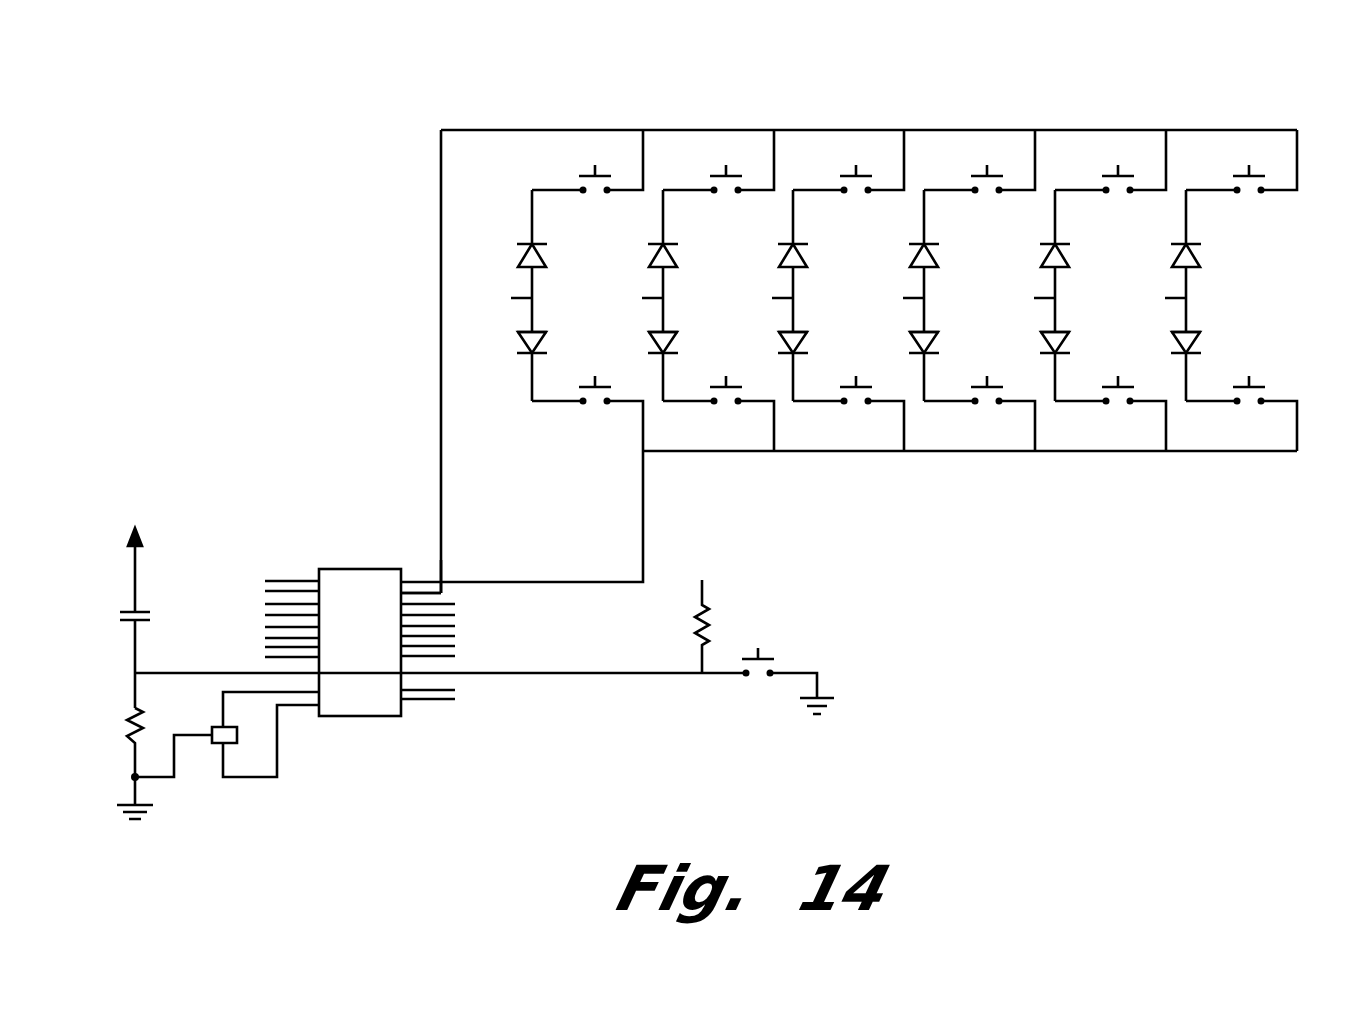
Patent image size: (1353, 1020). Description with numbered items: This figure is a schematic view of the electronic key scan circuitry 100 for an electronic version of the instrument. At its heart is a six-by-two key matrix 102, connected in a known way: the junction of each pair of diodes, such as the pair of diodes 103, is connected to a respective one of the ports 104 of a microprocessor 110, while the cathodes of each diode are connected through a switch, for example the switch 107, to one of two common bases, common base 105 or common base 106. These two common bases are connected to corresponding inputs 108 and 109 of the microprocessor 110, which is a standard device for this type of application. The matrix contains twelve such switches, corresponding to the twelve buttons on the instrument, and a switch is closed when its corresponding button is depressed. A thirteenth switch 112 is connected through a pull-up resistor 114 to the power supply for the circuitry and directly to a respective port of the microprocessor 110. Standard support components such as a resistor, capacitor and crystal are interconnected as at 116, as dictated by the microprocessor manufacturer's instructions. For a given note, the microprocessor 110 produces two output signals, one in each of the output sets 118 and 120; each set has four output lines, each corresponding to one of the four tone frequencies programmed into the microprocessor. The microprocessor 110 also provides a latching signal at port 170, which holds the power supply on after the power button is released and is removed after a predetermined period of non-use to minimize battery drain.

The key scan circuitry 100 is at (782, 98).
The key matrix 102 is at (930, 322).
The pair of diodes 103 is at (1199, 291).
The ports 104 is at (488, 595).
The common base 105 is at (933, 130).
The common base 106 is at (925, 451).
The switch 107 is at (1268, 388).
The input of microprocessor 108 is at (427, 583).
The input of microprocessor 109 is at (443, 583).
The microprocessor 110 is at (348, 731).
The thirteenth switch 112 is at (787, 656).
The pull-up resistor 114 is at (720, 612).
The support components 116 is at (135, 777).
The output set 118 is at (230, 572).
The output set 120 is at (230, 617).
The port 170 is at (455, 690).